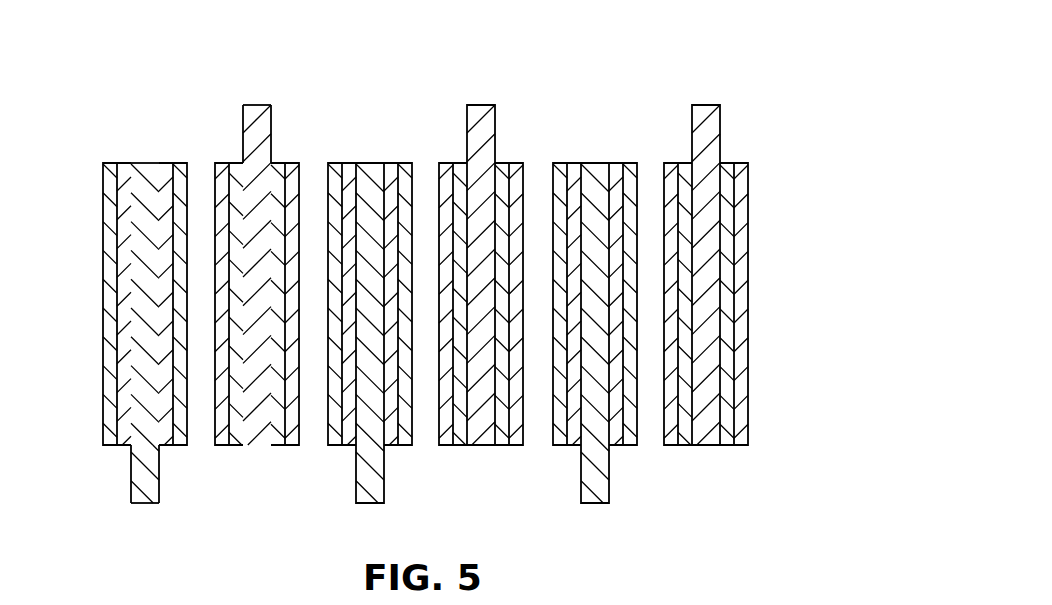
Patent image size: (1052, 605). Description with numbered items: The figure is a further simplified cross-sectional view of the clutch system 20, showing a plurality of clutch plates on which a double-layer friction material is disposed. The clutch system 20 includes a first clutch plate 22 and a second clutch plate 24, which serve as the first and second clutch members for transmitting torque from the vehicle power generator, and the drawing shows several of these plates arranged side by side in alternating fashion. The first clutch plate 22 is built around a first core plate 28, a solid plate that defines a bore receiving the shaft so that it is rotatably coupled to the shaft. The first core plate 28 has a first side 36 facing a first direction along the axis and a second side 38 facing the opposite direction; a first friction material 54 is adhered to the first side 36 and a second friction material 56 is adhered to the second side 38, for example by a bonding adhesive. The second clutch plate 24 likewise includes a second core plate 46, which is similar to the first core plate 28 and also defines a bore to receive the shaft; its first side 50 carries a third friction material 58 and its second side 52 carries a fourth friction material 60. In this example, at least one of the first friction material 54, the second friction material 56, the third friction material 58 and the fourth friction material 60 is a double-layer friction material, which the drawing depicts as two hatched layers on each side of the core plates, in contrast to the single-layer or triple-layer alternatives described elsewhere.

The clutch system 20 is at (687, 66).
The first clutch plate 22 is at (144, 148).
The second clutch plate 24 is at (254, 93).
The first core plate 28 is at (143, 497).
The first side 36 is at (123, 473).
The second side 38 is at (167, 473).
The second core plate 46 is at (267, 124).
The first side 50 is at (235, 141).
The second side 52 is at (279, 141).
The first friction material 54 is at (127, 162).
The second friction material 56 is at (165, 162).
The third friction material 58 is at (237, 447).
The fourth friction material 60 is at (293, 447).